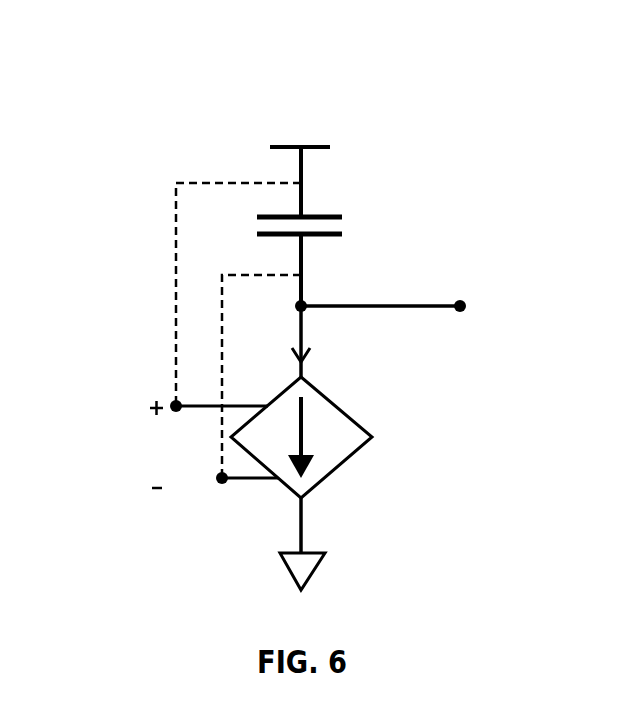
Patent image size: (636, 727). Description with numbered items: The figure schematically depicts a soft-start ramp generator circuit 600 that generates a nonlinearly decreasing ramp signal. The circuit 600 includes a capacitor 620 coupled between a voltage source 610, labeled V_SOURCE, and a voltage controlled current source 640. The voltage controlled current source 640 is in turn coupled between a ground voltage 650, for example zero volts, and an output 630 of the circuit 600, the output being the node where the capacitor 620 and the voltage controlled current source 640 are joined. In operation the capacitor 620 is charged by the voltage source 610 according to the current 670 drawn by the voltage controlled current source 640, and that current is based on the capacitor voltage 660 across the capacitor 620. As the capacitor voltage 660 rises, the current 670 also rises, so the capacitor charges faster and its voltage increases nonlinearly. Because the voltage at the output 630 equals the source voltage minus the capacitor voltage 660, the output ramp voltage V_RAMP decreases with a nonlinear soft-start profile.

The soft-start ramp generator circuit 600 is at (94, 75).
The voltage source 610 is at (370, 127).
The capacitor 620 is at (370, 224).
The output 630 is at (482, 310).
The voltage controlled current source 640 is at (365, 407).
The ground voltage 650 is at (358, 567).
The capacitor voltage 660 is at (103, 445).
The current of the VCCS 670 is at (394, 331).